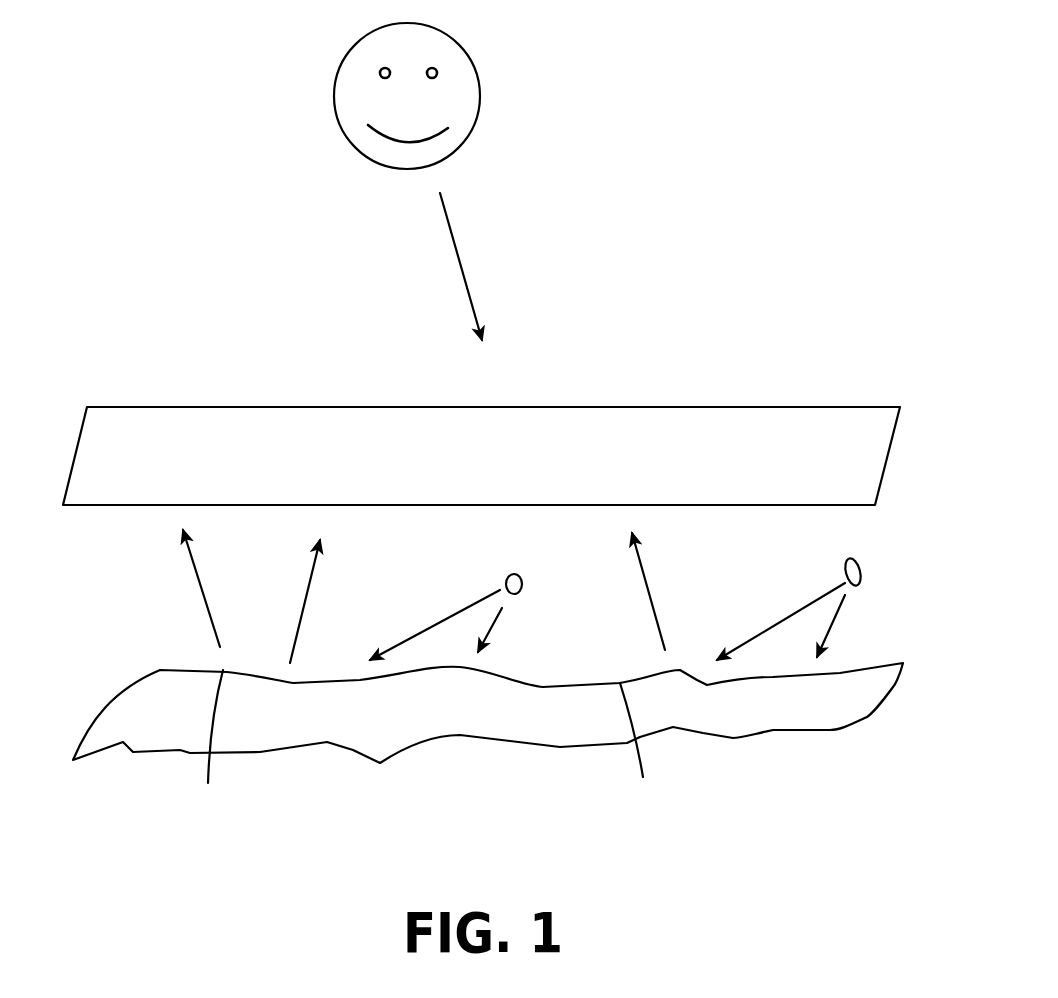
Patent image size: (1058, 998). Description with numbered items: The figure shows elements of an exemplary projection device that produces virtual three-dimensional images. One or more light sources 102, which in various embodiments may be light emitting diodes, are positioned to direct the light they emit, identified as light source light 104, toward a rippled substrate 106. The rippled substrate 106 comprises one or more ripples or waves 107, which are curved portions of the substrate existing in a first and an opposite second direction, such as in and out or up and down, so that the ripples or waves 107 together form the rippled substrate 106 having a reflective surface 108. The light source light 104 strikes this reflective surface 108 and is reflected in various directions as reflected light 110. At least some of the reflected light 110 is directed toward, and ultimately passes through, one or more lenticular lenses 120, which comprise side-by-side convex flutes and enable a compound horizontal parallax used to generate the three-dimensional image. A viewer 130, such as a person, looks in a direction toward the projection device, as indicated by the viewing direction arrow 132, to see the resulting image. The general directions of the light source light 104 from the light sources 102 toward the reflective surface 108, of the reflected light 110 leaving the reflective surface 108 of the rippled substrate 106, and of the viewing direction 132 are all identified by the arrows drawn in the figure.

The light source 102 is at (523, 577).
The light source light 104 is at (443, 620).
The rippled substrate 106 is at (480, 720).
The ripples or waves 107 is at (432, 752).
The reflective surface 108 is at (315, 683).
The reflected light 110 is at (217, 643).
The lenticular lens 120 is at (425, 475).
The viewer 130 is at (467, 98).
The viewing direction arrow 132 is at (462, 268).